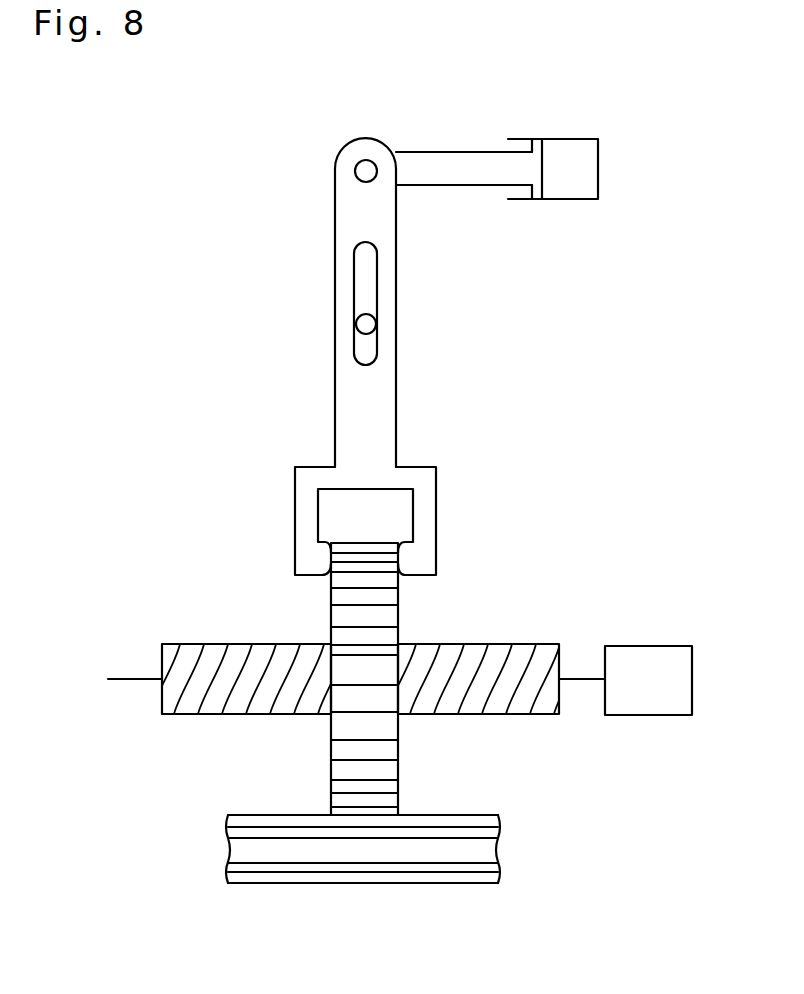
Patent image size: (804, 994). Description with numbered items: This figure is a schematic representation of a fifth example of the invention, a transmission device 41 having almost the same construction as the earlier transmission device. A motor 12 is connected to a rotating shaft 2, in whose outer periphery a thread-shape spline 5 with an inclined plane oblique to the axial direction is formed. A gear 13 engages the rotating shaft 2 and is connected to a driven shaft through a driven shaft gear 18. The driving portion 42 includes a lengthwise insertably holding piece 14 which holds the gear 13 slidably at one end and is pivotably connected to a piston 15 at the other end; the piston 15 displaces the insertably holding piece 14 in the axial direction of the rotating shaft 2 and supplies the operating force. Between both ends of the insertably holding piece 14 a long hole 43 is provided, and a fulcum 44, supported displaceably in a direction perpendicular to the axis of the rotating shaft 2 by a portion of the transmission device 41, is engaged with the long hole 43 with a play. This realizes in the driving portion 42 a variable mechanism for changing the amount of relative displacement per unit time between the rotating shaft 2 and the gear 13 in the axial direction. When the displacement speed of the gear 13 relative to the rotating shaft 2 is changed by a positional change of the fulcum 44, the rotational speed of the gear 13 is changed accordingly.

The transmission device 41 is at (345, 110).
The driving portion 42 is at (440, 150).
The insertably holding piece 14 is at (353, 203).
The piston 15 is at (477, 172).
The long hole 43 is at (362, 277).
The fulcum 44 is at (366, 324).
The gear 13 is at (392, 614).
The rotating shaft 2 is at (534, 645).
The thread-shape spline 5 is at (513, 683).
The motor 12 is at (652, 646).
The driven shaft gear 18 is at (473, 852).